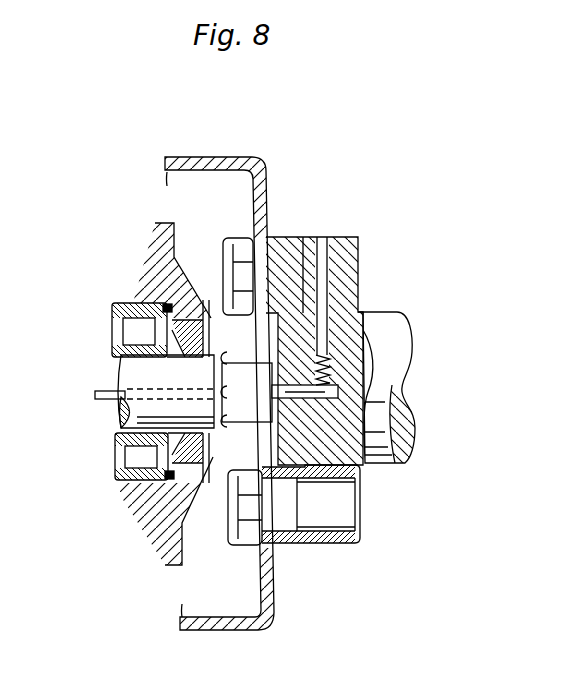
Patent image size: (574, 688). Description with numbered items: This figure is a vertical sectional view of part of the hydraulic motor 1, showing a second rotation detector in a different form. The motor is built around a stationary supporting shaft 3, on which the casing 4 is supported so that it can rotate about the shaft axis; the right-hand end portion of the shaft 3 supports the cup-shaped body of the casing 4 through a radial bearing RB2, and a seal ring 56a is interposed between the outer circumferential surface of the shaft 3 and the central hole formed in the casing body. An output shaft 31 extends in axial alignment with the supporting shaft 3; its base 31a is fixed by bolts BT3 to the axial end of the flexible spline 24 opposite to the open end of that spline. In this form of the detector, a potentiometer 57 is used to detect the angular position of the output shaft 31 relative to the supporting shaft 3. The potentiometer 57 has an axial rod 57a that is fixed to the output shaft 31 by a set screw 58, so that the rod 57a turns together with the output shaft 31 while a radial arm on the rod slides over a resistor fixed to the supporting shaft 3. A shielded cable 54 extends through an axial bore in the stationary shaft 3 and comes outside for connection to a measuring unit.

The hydraulic motor 1 is at (192, 232).
The stationary supporting shaft 3 is at (143, 407).
The casing 4 is at (183, 550).
The flexible spline 24 is at (222, 157).
The output shaft 31 is at (390, 320).
The base of output shaft 31a is at (340, 250).
The shielded cable 54 is at (103, 390).
The seal ring 56a is at (172, 303).
The potentiometer 57 is at (245, 413).
The axial rod 57a is at (359, 466).
The set screw 58 is at (333, 363).
The radial bearing RB2 is at (123, 482).
The bolts BT3 is at (281, 522).